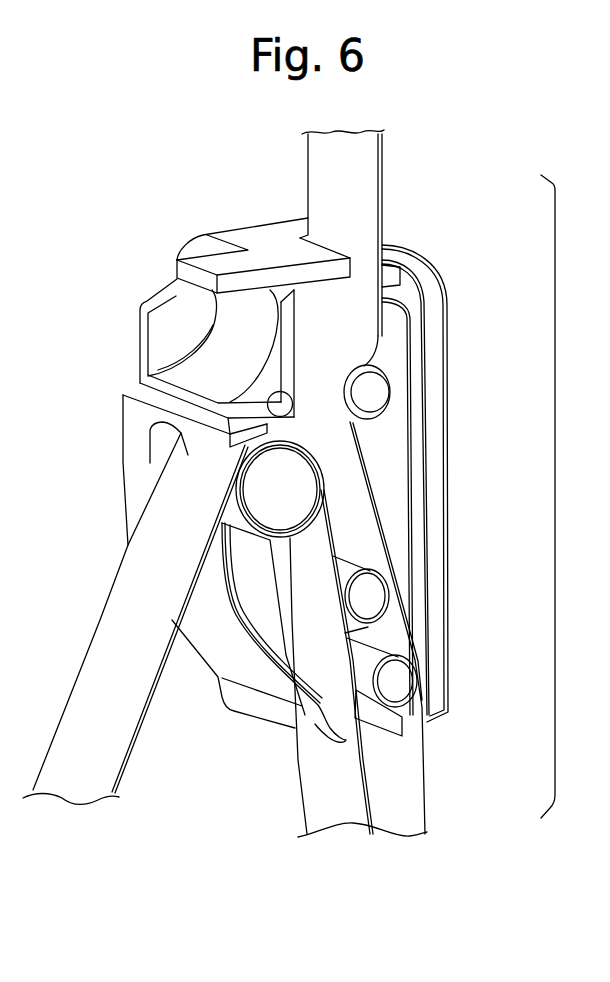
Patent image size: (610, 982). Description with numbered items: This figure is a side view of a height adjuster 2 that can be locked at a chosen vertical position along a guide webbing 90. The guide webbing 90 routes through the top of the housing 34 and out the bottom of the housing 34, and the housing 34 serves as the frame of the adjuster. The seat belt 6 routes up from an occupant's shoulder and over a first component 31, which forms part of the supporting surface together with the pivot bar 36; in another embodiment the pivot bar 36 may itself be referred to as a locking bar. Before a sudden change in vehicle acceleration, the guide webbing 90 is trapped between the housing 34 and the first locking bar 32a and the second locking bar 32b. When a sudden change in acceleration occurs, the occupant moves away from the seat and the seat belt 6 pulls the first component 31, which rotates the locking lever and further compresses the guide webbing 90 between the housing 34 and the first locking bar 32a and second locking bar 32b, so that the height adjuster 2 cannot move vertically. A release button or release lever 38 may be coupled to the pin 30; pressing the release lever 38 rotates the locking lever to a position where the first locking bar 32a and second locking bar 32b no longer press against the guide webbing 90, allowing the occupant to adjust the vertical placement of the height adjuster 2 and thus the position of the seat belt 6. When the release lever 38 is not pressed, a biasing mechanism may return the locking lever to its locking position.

The height adjuster 2 is at (561, 496).
The seat belt 6 is at (98, 637).
The pin 30 is at (268, 394).
The first component 31 is at (297, 490).
The first locking bar 32a is at (400, 678).
The second locking bar 32b is at (382, 394).
The housing 34 is at (223, 221).
The pivot bar 36 is at (377, 598).
The release lever 38 is at (143, 305).
The guide webbing 90 is at (379, 188).